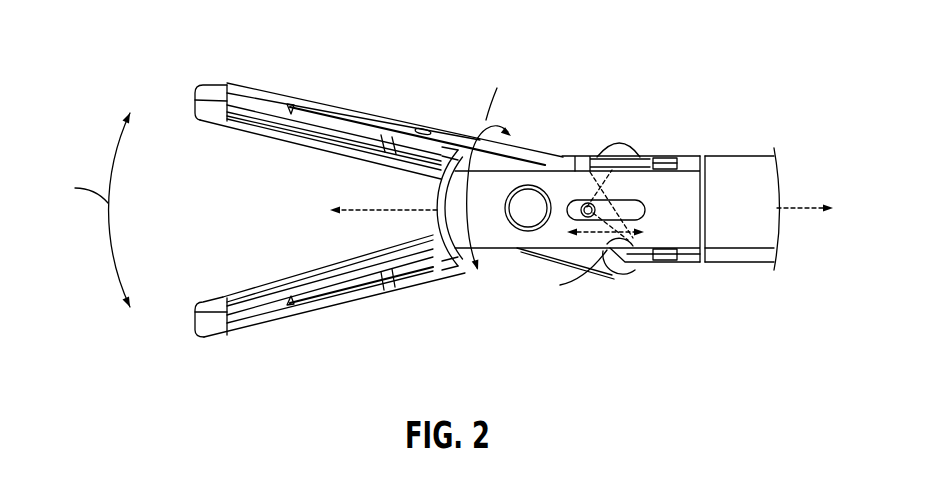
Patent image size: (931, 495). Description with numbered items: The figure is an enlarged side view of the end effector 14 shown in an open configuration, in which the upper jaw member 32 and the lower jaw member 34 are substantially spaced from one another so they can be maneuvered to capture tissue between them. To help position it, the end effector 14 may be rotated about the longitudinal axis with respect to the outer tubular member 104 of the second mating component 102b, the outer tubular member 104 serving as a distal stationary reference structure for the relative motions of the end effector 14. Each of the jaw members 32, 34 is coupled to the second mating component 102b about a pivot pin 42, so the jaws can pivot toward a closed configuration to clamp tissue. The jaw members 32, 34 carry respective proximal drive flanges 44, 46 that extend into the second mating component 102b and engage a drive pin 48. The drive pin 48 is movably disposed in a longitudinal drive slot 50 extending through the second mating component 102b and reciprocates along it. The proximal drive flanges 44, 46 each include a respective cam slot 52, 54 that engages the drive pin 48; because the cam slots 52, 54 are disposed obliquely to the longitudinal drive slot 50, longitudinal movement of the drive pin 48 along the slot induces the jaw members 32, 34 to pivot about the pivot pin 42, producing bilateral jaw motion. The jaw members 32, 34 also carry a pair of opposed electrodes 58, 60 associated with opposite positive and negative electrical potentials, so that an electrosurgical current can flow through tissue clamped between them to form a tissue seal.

The end effector 14 is at (415, 48).
The upper jaw member 32 is at (250, 89).
The lower jaw member 34 is at (258, 323).
The pivot pin 42 is at (530, 197).
The proximal drive flange 44 is at (623, 276).
The proximal drive flange 46 is at (617, 148).
The drive pin 48 is at (588, 203).
The longitudinal drive slot 50 is at (647, 210).
The cam slot 52 is at (638, 267).
The cam slot 54 is at (650, 157).
The electrode 58 is at (238, 132).
The electrode 60 is at (238, 291).
The second mating component 102b is at (733, 146).
The outer tubular member 104 is at (760, 192).